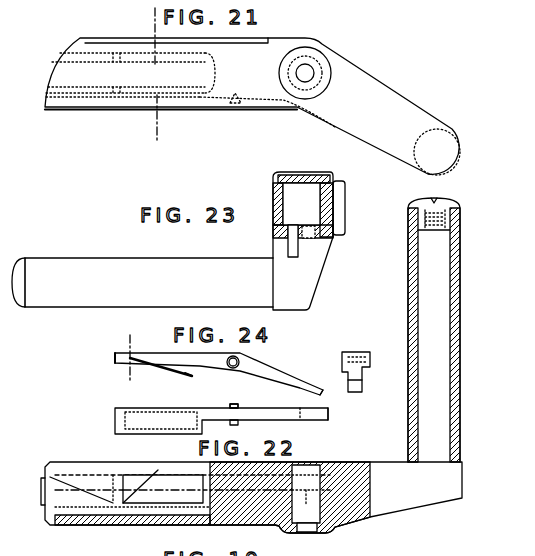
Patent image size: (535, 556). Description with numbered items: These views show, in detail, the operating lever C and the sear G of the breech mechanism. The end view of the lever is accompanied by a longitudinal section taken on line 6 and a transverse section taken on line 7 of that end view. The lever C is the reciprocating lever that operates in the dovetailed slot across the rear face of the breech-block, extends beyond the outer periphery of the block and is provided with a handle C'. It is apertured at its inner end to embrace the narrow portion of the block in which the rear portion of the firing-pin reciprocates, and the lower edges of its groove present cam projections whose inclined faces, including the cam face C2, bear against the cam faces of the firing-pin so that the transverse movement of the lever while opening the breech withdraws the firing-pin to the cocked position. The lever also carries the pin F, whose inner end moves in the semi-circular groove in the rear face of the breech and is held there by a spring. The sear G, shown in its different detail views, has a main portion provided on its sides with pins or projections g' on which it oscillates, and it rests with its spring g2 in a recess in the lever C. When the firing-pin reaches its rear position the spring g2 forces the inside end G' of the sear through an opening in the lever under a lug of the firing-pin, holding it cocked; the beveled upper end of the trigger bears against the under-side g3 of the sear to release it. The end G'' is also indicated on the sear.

In FIG. 21, the section line 6 is at (70, 73).
In FIG. 21, the section line 7 is at (147, 86).
In FIG. 21, the operating lever C is at (320, 80).
In FIG. 23, the operating lever C is at (178, 241).
In FIG. 22, the operating lever C is at (251, 497).
In FIG. 22, the handle C' is at (449, 330).
In FIG. 22, the cam face C2 is at (126, 486).
In FIG. 22, the pin F is at (306, 498).
In FIG. 24, the sear G is at (242, 380).
In FIG. 24, the inside end of sear G' is at (219, 364).
In FIG. 24, the spring end G'' is at (91, 399).
In FIG. 21, the pins or projections g' is at (235, 114).
In FIG. 24, the pins or projections g' is at (243, 383).
In FIG. 24, the sear spring g2 is at (190, 378).
In FIG. 24, the under-side of sear g3 is at (320, 397).